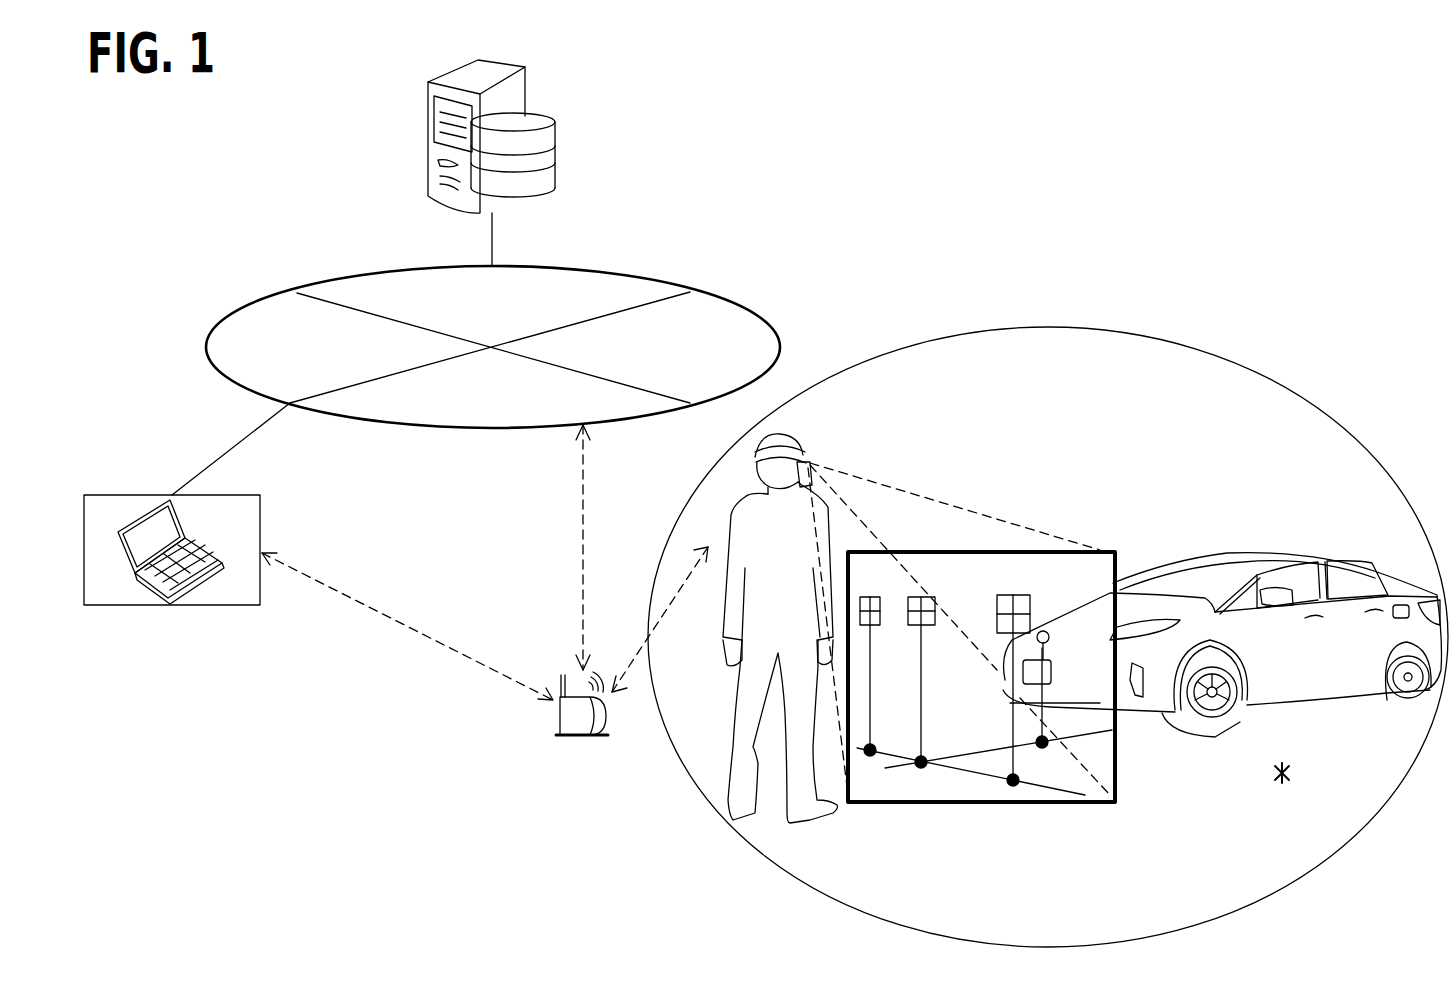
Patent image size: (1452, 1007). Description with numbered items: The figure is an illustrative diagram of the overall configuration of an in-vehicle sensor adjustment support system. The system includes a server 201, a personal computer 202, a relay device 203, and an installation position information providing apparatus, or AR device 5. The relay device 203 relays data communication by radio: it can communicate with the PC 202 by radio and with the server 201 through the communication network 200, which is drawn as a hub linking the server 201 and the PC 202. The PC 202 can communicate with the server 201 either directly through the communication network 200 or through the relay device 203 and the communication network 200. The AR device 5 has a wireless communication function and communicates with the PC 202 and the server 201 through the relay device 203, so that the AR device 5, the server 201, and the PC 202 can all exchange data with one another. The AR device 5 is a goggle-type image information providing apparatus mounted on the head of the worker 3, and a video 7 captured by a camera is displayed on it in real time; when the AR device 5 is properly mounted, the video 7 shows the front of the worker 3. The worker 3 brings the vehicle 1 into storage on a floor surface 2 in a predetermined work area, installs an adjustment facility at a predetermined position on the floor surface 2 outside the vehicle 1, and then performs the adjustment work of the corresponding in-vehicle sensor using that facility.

The vehicle 1 is at (1302, 548).
The floor surface 2 is at (1290, 772).
The worker 3 is at (758, 491).
The installation position information providing apparatus (AR device) 5 is at (812, 462).
The video 7 is at (952, 551).
The communication network 200 is at (632, 277).
The server 201 is at (530, 92).
The personal computer (PC) 202 is at (150, 494).
The relay device 203 is at (585, 738).